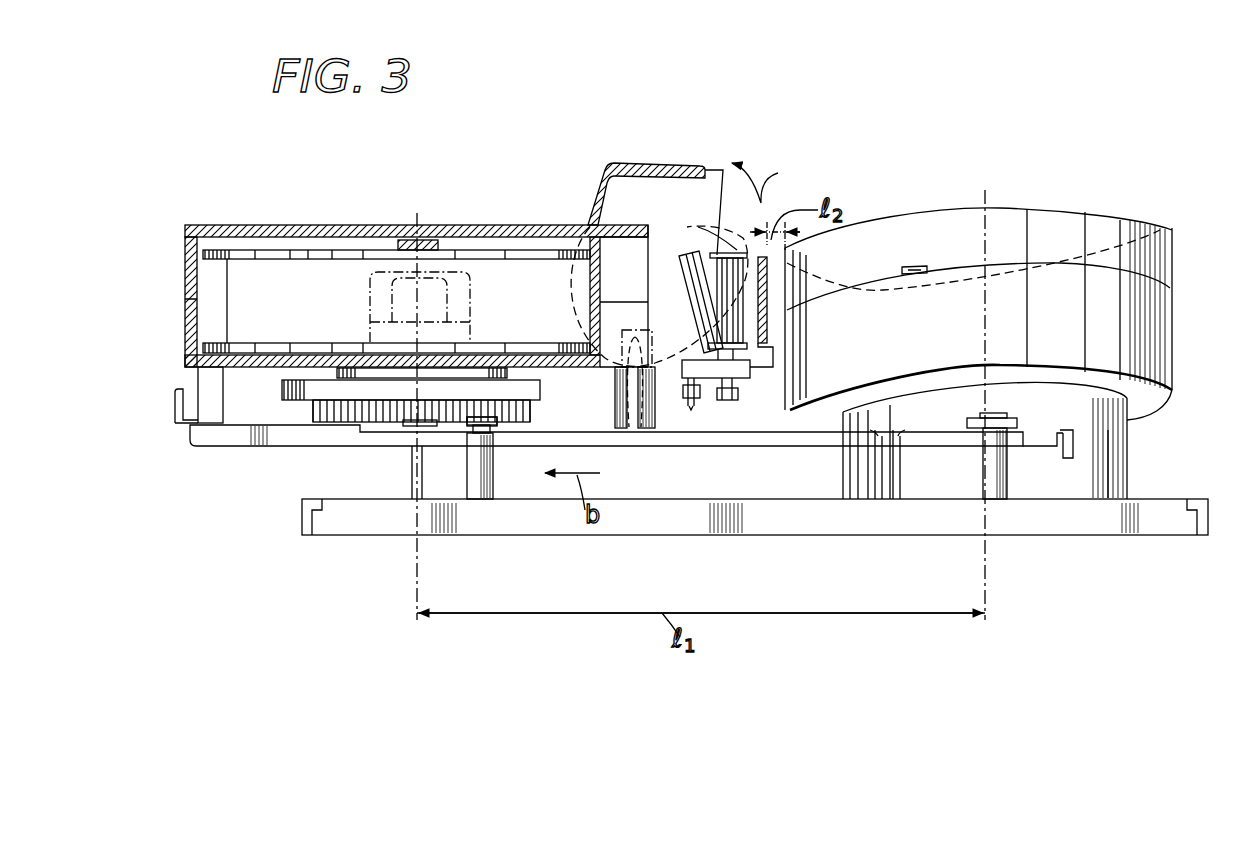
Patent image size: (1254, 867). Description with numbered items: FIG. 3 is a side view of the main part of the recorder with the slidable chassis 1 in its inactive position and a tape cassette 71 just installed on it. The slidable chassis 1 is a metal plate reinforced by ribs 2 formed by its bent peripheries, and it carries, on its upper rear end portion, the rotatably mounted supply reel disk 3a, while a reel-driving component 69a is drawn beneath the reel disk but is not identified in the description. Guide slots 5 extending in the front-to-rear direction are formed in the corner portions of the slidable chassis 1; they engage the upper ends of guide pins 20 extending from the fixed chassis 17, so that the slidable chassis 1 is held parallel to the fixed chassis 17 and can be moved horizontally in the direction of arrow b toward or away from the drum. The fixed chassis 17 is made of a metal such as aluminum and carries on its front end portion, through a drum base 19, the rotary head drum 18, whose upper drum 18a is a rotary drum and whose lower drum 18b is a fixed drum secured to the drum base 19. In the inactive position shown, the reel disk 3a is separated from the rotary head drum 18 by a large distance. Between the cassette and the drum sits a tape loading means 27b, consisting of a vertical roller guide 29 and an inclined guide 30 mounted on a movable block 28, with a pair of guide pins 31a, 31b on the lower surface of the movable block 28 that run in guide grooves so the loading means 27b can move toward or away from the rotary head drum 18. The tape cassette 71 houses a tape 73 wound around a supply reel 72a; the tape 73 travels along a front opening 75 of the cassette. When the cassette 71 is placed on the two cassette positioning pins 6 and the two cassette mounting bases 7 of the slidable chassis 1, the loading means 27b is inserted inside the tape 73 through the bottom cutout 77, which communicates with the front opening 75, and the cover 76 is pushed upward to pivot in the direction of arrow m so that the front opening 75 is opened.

The slidable chassis 1 is at (737, 437).
The ribs 2 is at (178, 390).
The supply reel disk 3a is at (443, 282).
The guide slots 5 is at (406, 432).
The cassette positioning pins 6 is at (633, 428).
The cassette mounting bases 7 is at (213, 372).
The fixed chassis 17 is at (746, 539).
The rotary head drum 18 is at (1178, 224).
The upper drum 18a is at (1160, 262).
The lower drum 18b is at (1157, 333).
The drum base 19 is at (1115, 458).
The guide pins 20 is at (485, 480).
The tape loading means 27b is at (742, 222).
The movable block 28 is at (751, 370).
The vertical roller guide 29 is at (740, 288).
The inclined guide 30 is at (700, 250).
The guide pin 31a is at (690, 412).
The guide pin 31b is at (728, 402).
The reel gear 69a is at (315, 410).
The tape cassette 71 is at (182, 223).
The supply reel 72a is at (338, 249).
The tape 73 is at (773, 332).
The front opening 75 is at (777, 322).
The cover 76 is at (668, 170).
The bottom cutout 77 is at (605, 370).